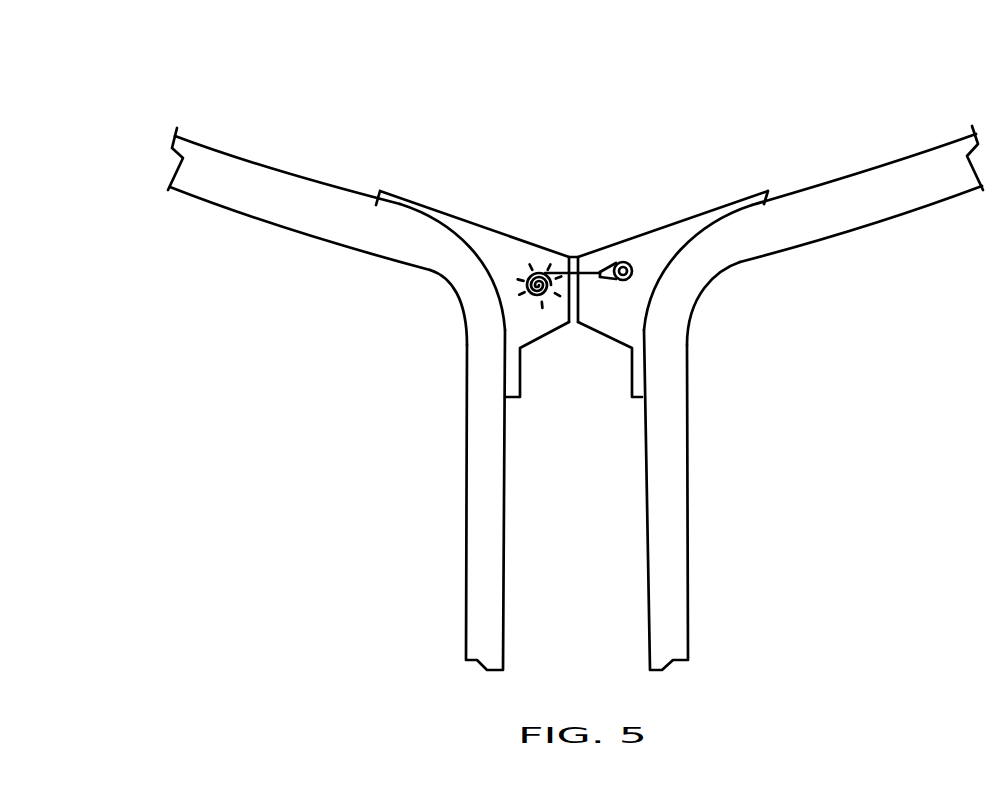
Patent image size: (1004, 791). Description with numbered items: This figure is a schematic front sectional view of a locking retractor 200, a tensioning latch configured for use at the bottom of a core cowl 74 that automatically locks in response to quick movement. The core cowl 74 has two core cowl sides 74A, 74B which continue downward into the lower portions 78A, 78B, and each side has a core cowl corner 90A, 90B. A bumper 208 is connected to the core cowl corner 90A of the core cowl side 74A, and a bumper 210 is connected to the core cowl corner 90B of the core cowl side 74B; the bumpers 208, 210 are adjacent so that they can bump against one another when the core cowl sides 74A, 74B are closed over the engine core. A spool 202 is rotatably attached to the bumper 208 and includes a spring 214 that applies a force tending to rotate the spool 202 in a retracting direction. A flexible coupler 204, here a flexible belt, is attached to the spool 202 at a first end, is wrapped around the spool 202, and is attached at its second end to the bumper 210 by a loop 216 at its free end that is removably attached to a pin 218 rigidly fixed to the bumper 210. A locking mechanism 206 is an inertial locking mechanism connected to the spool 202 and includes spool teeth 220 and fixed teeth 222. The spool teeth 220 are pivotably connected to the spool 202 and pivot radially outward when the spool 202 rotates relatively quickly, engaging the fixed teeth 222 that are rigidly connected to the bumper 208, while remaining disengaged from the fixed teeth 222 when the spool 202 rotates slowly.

The core cowl 74 is at (166, 238).
The core cowl side 74A is at (273, 241).
The core cowl side 74B is at (860, 246).
The first leg 78A is at (465, 503).
The second leg 78B is at (690, 522).
The core cowl corner 90A is at (447, 298).
The core cowl corner 90B is at (693, 308).
The locking retractor 200 is at (503, 128).
The spool 202 is at (556, 313).
The flexible coupler 204 is at (577, 255).
The locking mechanism 206 is at (508, 306).
The bumper 208 is at (448, 215).
The bumper 210 is at (762, 196).
The spring 214 is at (564, 282).
The loop 216 is at (616, 262).
The pin 218 is at (631, 262).
The spool teeth 220 is at (541, 270).
The fixed teeth 222 is at (527, 310).